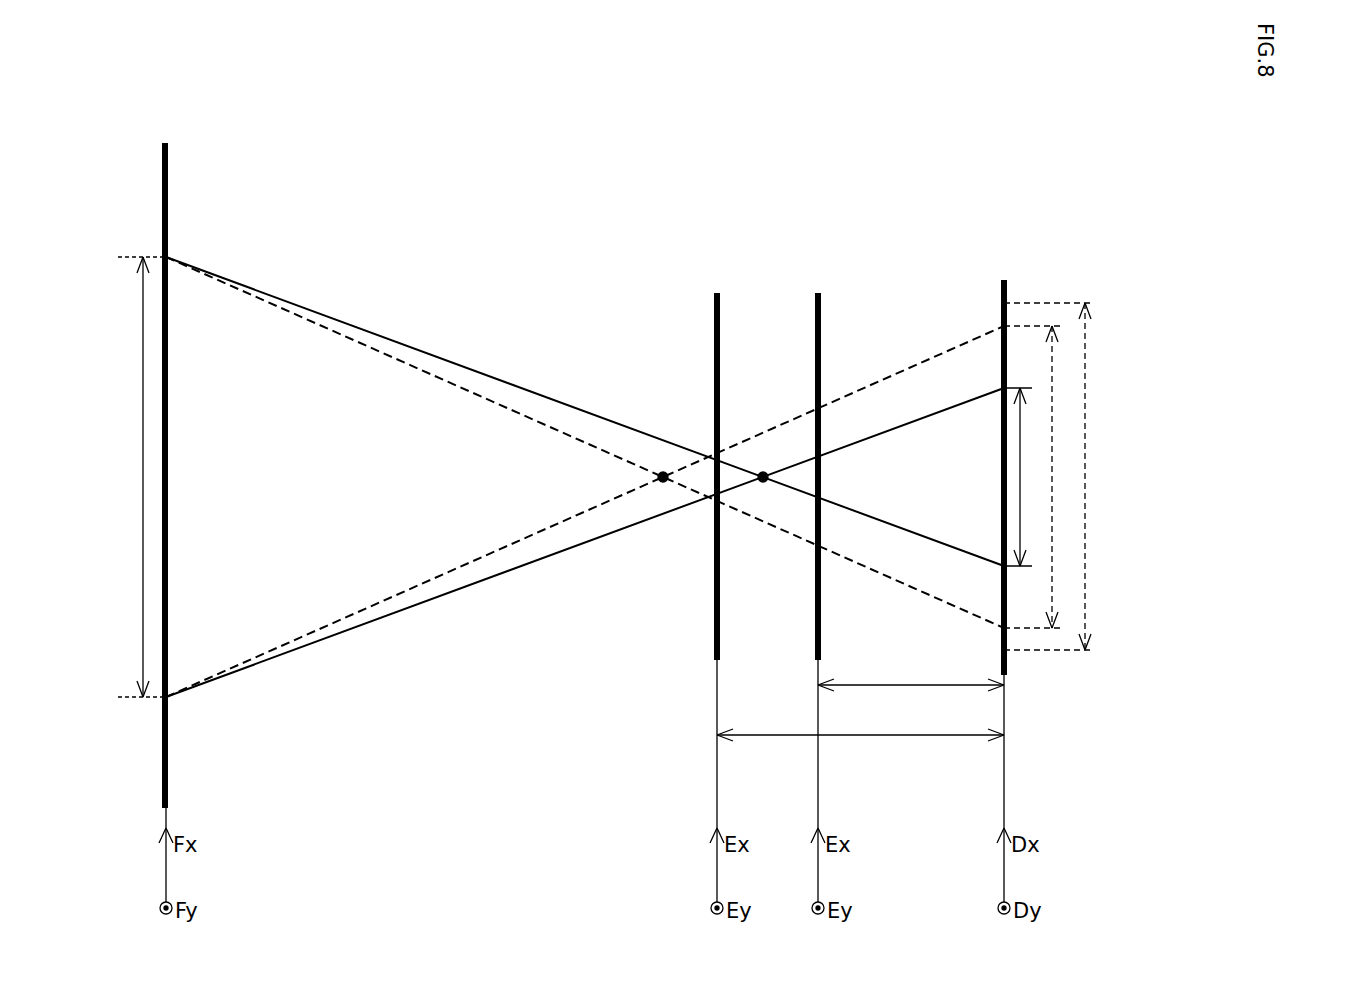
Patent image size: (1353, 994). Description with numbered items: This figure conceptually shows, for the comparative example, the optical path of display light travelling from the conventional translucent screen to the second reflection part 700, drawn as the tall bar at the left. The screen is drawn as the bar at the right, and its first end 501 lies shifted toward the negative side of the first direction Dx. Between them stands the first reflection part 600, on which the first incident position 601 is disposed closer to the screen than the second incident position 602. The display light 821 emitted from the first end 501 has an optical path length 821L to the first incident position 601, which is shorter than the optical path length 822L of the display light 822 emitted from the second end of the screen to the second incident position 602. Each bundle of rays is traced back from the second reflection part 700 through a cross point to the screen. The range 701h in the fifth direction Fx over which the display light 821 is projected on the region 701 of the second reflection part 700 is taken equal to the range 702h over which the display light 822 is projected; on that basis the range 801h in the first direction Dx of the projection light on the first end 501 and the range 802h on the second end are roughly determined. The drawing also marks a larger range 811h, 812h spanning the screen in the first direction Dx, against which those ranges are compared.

The second reflection part 700 is at (172, 141).
The first image region 701 is at (168, 212).
The range on the second reflection part 701h is at (143, 424).
The range on the second reflection part 702h is at (142, 477).
The first reflection part 600 is at (710, 439).
The first incident position 601 is at (817, 345).
The second incident position 602 is at (716, 313).
The first light ray 821 is at (902, 436).
The second light ray 822 is at (770, 428).
The first end 501 is at (1003, 313).
The range of projection light on the first end 801h is at (1020, 531).
The range of projection light on the second end 802h is at (1052, 478).
The height of first display 811h is at (1085, 380).
The height of second display 812h is at (1048, 476).
The distance between first lens and display 821L is at (1004, 686).
The distance between second lens and display 822L is at (1004, 736).